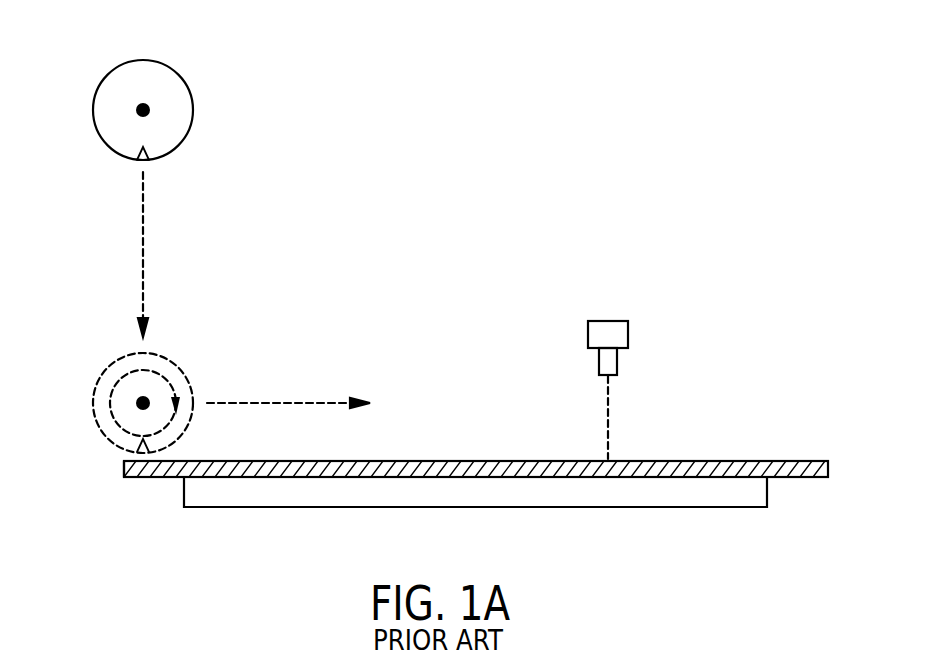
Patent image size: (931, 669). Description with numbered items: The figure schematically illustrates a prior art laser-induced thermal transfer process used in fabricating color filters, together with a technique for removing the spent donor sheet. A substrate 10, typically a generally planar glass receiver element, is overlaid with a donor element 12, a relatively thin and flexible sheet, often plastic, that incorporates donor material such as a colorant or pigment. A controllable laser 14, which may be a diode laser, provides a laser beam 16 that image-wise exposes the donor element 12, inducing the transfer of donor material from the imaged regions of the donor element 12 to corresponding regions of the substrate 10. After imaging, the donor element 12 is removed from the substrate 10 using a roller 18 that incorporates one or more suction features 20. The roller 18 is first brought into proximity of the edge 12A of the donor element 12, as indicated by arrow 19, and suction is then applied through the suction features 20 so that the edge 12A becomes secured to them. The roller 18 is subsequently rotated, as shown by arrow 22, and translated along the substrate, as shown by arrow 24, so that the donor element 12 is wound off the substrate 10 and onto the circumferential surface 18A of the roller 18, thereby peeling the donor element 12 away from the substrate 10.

The substrate 10 is at (475, 491).
The donor element 12 is at (475, 460).
The edge of donor element 12A is at (124, 465).
The controllable laser 14 is at (608, 335).
The laser beam 16 is at (605, 403).
The roller 18 is at (180, 83).
The circumferential surface of roller 18A is at (193, 108).
The arrow 19 is at (142, 283).
The suction feature 20 is at (145, 161).
The arrow 22 is at (157, 372).
The arrow 24 is at (277, 402).